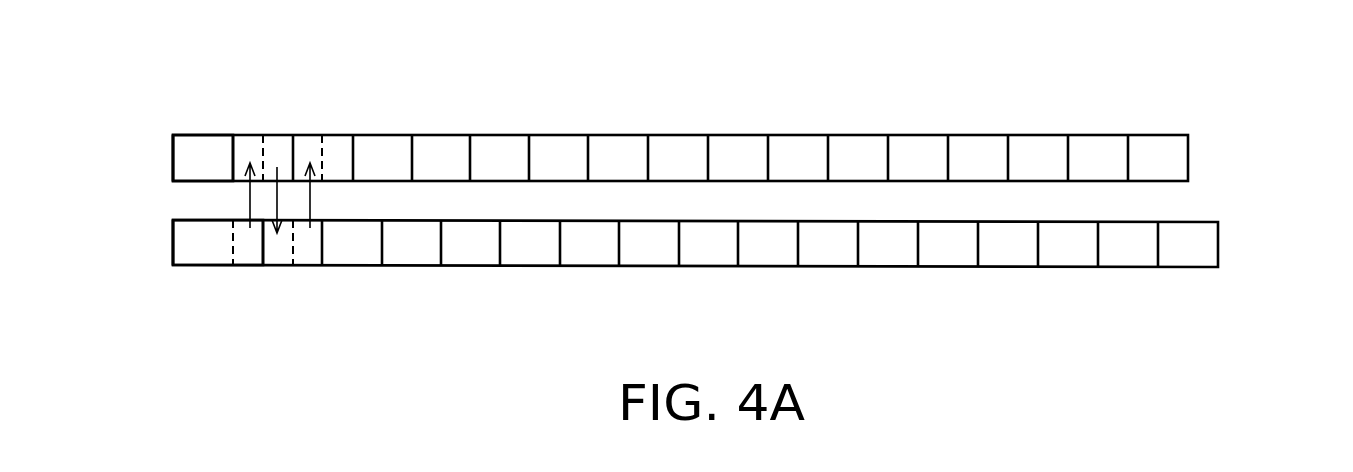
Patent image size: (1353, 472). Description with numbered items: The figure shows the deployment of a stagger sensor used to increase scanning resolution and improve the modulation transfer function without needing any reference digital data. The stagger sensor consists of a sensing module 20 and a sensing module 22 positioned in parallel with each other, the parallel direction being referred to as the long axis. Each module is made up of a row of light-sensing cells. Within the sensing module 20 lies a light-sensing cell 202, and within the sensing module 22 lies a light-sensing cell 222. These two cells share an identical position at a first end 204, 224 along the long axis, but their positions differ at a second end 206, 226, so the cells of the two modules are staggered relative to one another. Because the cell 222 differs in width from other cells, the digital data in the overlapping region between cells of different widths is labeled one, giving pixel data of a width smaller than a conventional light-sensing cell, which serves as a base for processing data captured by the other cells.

The sensing module 20 is at (667, 110).
The sensing module 22 is at (688, 261).
The light-sensing cell 202 is at (198, 152).
The first end 204 is at (167, 157).
The second end 206 is at (235, 131).
The light-sensing cell 222 is at (192, 242).
The first end 224 is at (177, 274).
The second end 226 is at (266, 274).